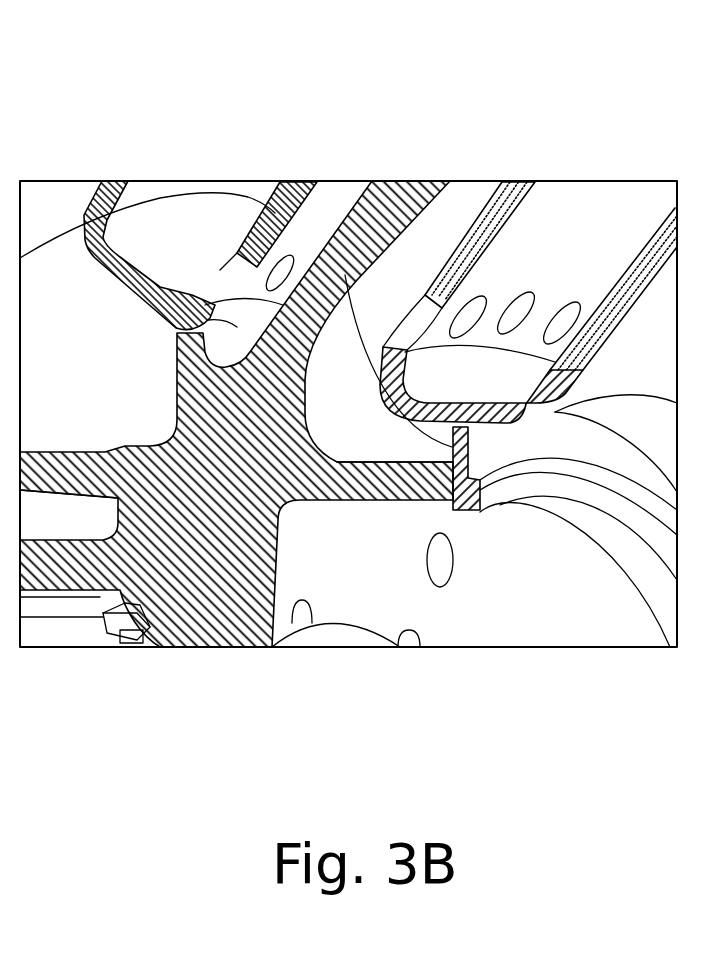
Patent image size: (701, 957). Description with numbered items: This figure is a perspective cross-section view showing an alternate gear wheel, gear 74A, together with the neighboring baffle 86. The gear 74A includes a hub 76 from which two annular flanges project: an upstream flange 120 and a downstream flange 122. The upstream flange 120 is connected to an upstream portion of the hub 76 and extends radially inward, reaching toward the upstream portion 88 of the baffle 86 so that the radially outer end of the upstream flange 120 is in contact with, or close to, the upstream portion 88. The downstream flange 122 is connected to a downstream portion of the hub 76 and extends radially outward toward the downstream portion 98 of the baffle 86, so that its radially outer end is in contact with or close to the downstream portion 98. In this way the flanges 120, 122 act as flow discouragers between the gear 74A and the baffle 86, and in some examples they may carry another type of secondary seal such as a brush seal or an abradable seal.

The gear 74A is at (180, 623).
The hub 76 is at (222, 378).
The baffle 86 is at (586, 178).
The upstream portion 88 is at (113, 187).
The downstream portion 98 is at (526, 190).
The upstream flange 120 is at (220, 342).
The downstream flange 122 is at (356, 368).